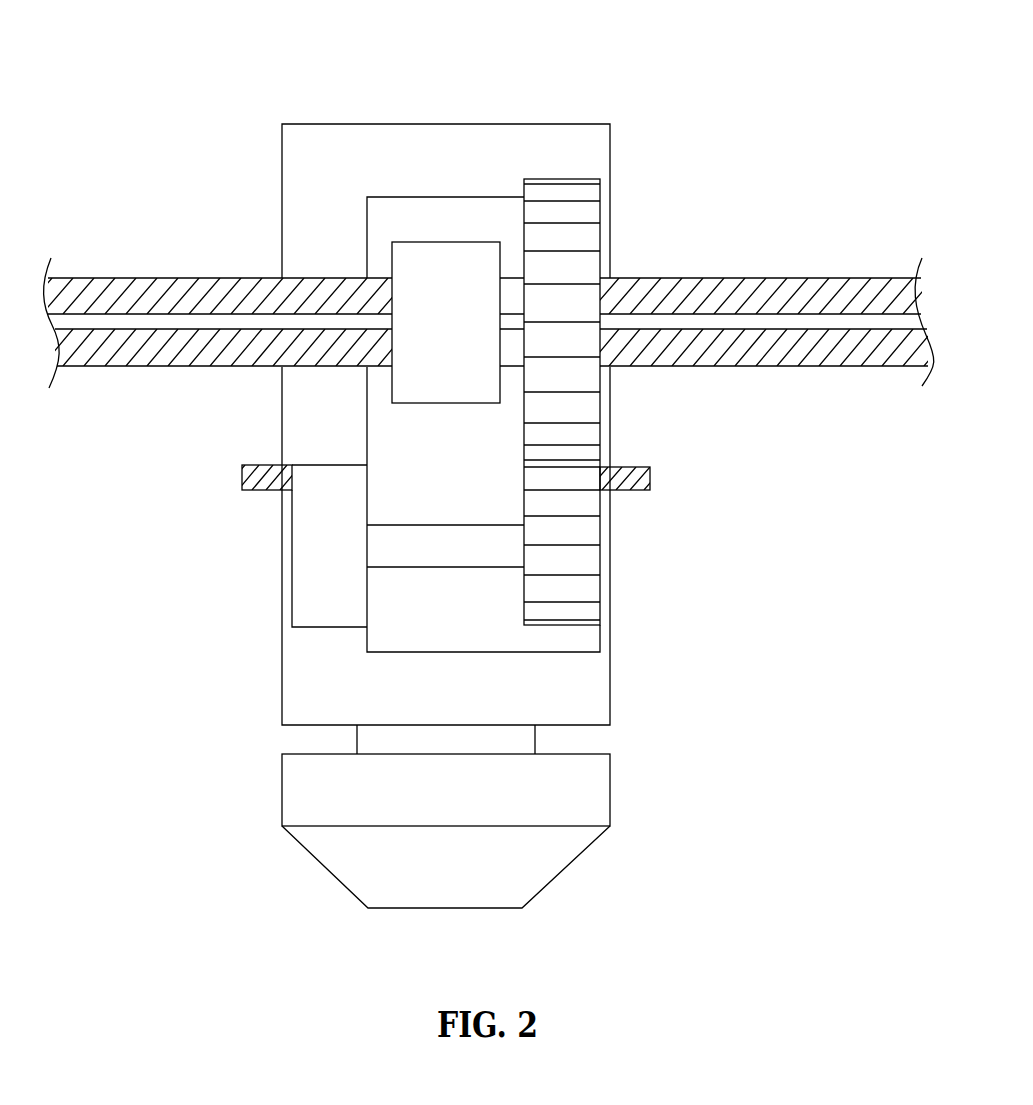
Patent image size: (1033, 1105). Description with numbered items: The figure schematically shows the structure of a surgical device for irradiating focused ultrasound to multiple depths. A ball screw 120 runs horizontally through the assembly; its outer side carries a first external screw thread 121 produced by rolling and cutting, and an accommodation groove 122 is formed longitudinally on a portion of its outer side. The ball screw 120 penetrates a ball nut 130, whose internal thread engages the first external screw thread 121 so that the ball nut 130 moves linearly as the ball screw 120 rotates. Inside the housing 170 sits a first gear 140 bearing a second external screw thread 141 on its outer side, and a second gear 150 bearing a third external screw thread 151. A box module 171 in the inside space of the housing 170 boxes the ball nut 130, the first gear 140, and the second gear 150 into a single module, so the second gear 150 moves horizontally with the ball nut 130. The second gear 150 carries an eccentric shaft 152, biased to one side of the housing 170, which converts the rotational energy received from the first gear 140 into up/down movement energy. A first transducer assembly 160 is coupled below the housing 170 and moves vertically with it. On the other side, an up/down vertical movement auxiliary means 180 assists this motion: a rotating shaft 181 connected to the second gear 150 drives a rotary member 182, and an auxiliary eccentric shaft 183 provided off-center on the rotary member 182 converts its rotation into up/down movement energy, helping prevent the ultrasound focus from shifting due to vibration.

The ball screw 120 is at (477, 336).
The first external screw thread 121 is at (85, 290).
The accommodation groove 122 is at (182, 310).
The ball nut 130 is at (450, 228).
The first gear 140 is at (642, 331).
The second external screw thread 141 is at (566, 210).
The second gear 150 is at (642, 537).
The third external screw thread 151 is at (587, 592).
The eccentric shaft 152 is at (650, 476).
The first transducer assembly 160 is at (629, 793).
The housing 170 is at (302, 124).
The box module 171 is at (367, 421).
The up/down vertical movement auxiliary means 180 is at (329, 597).
The rotating shaft 181 is at (443, 567).
The rotary member 182 is at (308, 548).
The auxiliary eccentric shaft 183 is at (240, 480).